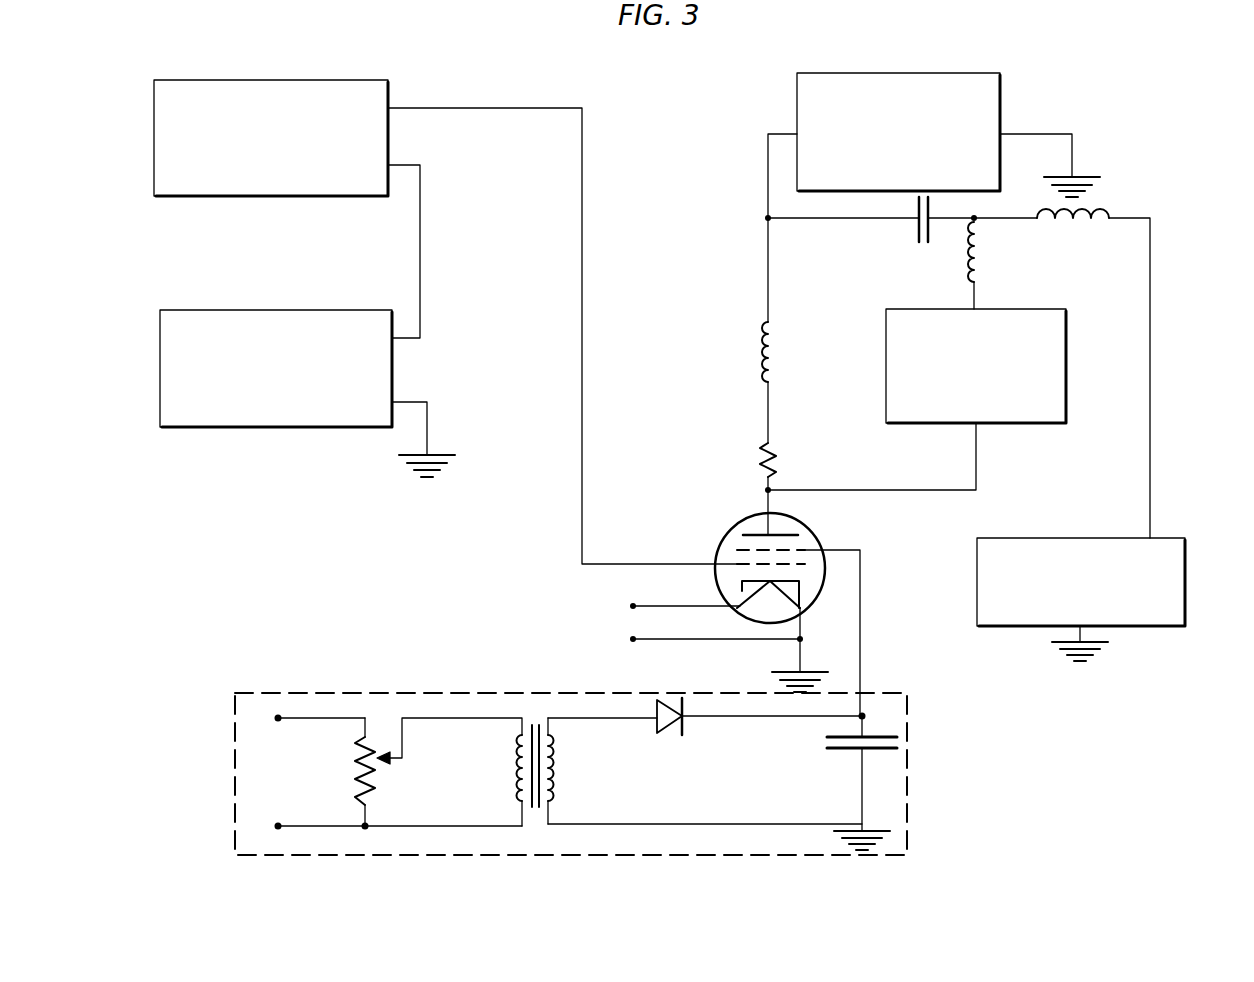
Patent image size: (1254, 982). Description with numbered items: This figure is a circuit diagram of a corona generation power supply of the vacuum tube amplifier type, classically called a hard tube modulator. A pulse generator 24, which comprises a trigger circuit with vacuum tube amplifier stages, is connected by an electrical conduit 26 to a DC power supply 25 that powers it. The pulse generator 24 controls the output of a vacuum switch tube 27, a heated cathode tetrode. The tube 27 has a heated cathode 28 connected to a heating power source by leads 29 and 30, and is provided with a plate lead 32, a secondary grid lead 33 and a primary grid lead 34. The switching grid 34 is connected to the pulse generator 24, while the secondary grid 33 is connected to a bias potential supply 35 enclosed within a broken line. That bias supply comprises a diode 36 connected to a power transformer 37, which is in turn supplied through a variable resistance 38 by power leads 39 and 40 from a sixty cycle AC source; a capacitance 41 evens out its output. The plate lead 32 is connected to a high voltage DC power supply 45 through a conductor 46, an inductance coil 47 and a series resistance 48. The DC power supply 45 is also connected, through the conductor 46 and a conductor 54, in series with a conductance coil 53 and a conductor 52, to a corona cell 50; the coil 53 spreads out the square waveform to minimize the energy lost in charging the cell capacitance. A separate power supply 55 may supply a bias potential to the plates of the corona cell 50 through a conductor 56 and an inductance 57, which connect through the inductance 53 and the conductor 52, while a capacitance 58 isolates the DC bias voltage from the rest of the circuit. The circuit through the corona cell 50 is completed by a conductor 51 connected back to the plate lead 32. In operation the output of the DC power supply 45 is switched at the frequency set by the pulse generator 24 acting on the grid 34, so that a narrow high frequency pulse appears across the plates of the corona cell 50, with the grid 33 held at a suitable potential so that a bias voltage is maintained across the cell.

The pulse generator 24 is at (268, 78).
The DC power supply 25 is at (258, 428).
The electrical conduit 26 is at (421, 232).
The vacuum switch tube 27 is at (822, 539).
The heated cathode 28 is at (805, 637).
The lead 29 is at (687, 641).
The lead 30 is at (674, 606).
The plate lead 32 is at (766, 498).
The secondary grid lead 33 is at (862, 581).
The primary grid lead 34 is at (645, 566).
The bias potential supply 35 is at (910, 703).
The diode 36 is at (668, 733).
The power transformer 37 is at (559, 757).
The variable resistance 38 is at (380, 789).
The power lead 39 is at (300, 718).
The power lead 40 is at (305, 826).
The capacitance 41 is at (831, 746).
The DC power supply 45 is at (927, 73).
The conductor 46 is at (768, 175).
The inductance coil 47 is at (761, 337).
The resistance 48 is at (760, 449).
The corona cell 50 is at (1067, 347).
The conductor 51 is at (978, 461).
The conductor 52 is at (979, 303).
The conductance coil 53 is at (982, 262).
The conductor 54 is at (868, 222).
The power supply 55 is at (1166, 627).
The conductor 56 is at (1152, 372).
The inductance 57 is at (1082, 214).
The capacitance 58 is at (932, 236).